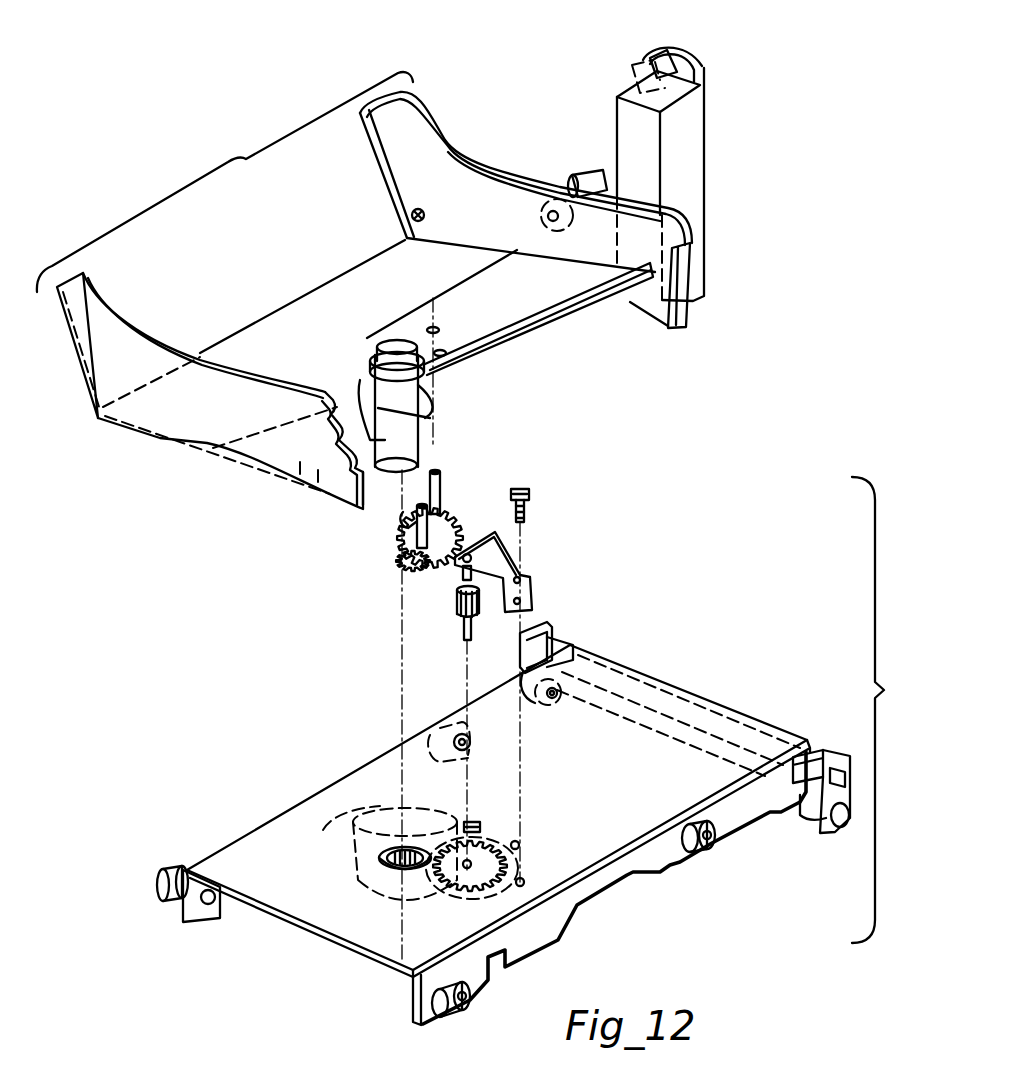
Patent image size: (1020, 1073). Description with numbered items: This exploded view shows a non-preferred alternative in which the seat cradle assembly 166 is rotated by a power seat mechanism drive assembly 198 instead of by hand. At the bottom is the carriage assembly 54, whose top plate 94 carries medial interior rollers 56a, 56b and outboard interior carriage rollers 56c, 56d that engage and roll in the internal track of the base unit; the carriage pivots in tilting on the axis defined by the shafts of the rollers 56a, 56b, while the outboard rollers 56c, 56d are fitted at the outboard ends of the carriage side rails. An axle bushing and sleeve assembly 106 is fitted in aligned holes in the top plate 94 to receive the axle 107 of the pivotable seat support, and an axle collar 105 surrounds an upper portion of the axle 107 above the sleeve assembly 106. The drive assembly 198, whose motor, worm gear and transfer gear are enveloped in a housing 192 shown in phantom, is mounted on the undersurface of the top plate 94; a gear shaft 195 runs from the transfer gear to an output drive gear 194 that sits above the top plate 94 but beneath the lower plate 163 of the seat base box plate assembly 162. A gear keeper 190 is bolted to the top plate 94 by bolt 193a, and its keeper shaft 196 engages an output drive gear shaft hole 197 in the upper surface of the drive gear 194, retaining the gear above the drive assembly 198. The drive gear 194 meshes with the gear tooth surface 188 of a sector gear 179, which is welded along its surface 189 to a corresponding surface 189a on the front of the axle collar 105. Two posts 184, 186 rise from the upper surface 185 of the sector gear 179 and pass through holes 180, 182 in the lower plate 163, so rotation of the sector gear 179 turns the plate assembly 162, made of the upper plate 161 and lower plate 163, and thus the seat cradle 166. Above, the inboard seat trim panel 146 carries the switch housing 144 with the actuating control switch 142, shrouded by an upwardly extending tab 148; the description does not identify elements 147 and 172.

The carriage assembly 54 is at (668, 751).
The medial interior roller 56a is at (705, 850).
The medial interior roller 56b is at (440, 758).
The outboard interior carriage roller 56c is at (446, 1018).
The outboard interior carriage roller 56d is at (170, 878).
The carriage top plate 94 is at (648, 760).
The axle collar 105 is at (372, 385).
The axle bushing and sleeve assembly 106 is at (375, 876).
The axle 107 is at (397, 343).
The actuating control switch 142 is at (648, 59).
The switch housing 144 is at (700, 150).
The inboard seat trim panel 146 is at (407, 126).
The side wall 147 is at (103, 310).
The upwardly extending tab 148 is at (692, 72).
The upper plate 161 is at (302, 356).
The seat base box plate assembly 162 is at (330, 271).
The lower plate 163 is at (257, 468).
The seat cradle assembly 166 is at (225, 182).
The roller 172 is at (585, 176).
The sector gear 179 is at (346, 539).
The hole 180 is at (439, 330).
The hole 182 is at (446, 354).
The post 184 is at (440, 474).
The upper surface 185 is at (402, 567).
The post 186 is at (407, 546).
The gear tooth surface 188 is at (428, 508).
The surface 189 is at (404, 519).
The corresponding surface 189a is at (430, 418).
The gear keeper 190 is at (535, 588).
The housing 192 is at (470, 898).
The bolt 193a is at (528, 504).
The output drive gear 194 is at (449, 635).
The gear shaft 195 is at (463, 642).
The keeper shaft 196 is at (462, 574).
The output drive gear shaft hole 197 is at (443, 614).
The power seat mechanism drive assembly 198 is at (373, 853).